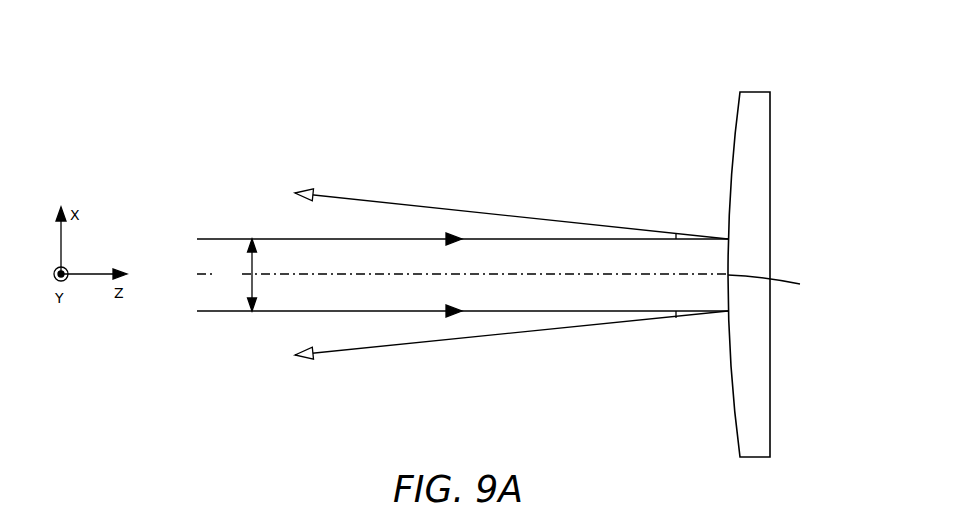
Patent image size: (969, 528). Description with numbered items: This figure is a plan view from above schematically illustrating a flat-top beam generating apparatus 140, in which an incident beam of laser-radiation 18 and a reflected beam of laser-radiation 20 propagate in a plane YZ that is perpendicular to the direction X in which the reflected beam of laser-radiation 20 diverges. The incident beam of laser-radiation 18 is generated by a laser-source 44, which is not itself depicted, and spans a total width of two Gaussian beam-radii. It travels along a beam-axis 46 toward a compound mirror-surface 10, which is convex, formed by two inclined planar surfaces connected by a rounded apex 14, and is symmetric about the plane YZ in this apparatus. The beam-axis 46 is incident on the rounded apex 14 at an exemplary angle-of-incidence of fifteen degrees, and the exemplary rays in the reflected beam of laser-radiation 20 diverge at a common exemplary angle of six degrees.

The flat-top beam generating apparatus 140 is at (206, 88).
The compound mirror-surface 10 is at (729, 170).
The rounded apex 14 is at (793, 281).
The incident beam of laser-radiation 18 is at (224, 314).
The reflected beam of laser-radiation 20 is at (348, 193).
The beam-axis 46 is at (608, 275).
The laser-source 44 is at (170, 273).